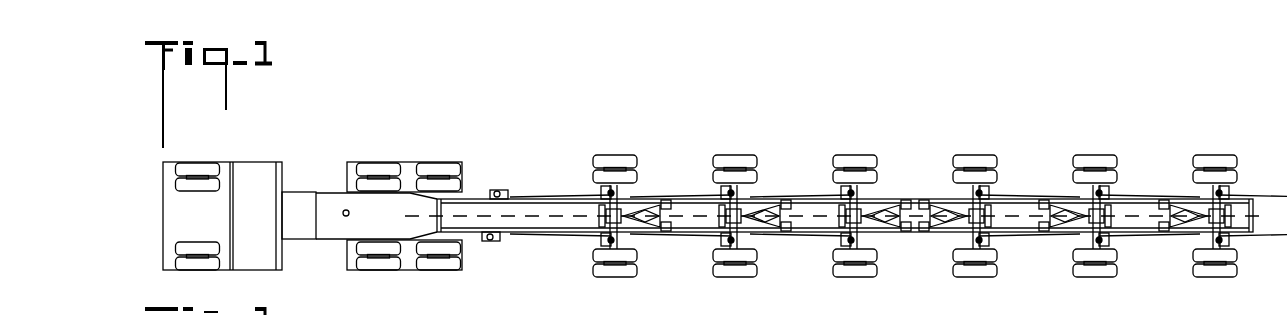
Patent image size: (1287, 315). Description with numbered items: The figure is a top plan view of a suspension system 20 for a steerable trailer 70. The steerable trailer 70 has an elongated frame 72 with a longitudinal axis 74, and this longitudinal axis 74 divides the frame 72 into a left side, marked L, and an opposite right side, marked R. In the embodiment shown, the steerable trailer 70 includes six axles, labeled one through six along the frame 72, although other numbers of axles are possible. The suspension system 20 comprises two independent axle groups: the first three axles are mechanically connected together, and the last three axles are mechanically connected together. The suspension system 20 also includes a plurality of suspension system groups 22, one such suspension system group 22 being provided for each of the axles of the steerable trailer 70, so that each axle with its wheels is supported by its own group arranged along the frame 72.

The suspension system 20 is at (1057, 105).
The suspension system group 22 is at (898, 183).
The steerable trailer 70 is at (536, 193).
The elongated frame 72 is at (537, 232).
The longitudinal axis 74 is at (516, 217).